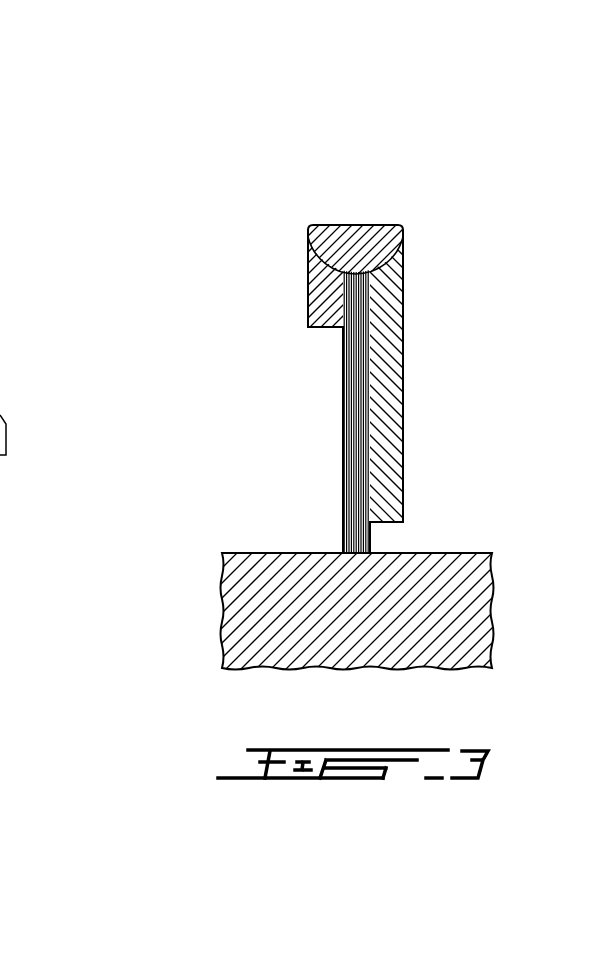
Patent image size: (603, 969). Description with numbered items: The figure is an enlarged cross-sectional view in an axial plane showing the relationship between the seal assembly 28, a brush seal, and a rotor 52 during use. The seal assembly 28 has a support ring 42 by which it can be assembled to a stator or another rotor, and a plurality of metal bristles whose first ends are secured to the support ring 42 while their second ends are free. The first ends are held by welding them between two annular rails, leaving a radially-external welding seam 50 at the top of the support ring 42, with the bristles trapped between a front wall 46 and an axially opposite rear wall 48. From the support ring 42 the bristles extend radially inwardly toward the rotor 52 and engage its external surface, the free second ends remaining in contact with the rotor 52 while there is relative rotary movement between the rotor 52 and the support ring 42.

The seal assembly 28 is at (315, 191).
The support ring 42 is at (305, 229).
The front wall 46 is at (328, 298).
The rear wall 48 is at (403, 397).
The welding seam 50 is at (367, 243).
The rotor 52 is at (455, 603).